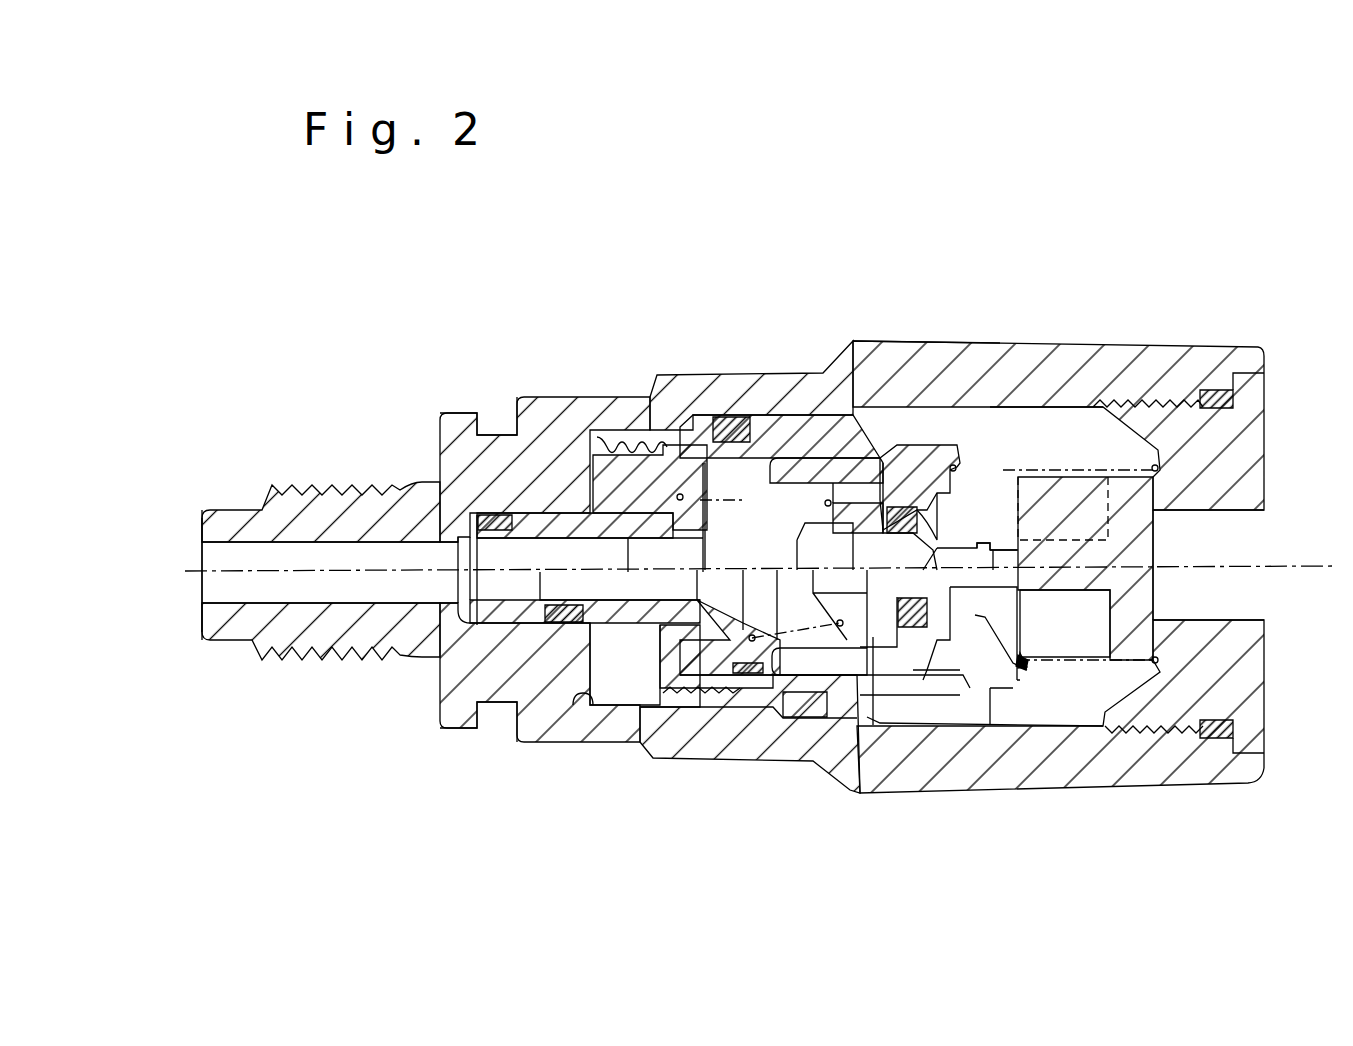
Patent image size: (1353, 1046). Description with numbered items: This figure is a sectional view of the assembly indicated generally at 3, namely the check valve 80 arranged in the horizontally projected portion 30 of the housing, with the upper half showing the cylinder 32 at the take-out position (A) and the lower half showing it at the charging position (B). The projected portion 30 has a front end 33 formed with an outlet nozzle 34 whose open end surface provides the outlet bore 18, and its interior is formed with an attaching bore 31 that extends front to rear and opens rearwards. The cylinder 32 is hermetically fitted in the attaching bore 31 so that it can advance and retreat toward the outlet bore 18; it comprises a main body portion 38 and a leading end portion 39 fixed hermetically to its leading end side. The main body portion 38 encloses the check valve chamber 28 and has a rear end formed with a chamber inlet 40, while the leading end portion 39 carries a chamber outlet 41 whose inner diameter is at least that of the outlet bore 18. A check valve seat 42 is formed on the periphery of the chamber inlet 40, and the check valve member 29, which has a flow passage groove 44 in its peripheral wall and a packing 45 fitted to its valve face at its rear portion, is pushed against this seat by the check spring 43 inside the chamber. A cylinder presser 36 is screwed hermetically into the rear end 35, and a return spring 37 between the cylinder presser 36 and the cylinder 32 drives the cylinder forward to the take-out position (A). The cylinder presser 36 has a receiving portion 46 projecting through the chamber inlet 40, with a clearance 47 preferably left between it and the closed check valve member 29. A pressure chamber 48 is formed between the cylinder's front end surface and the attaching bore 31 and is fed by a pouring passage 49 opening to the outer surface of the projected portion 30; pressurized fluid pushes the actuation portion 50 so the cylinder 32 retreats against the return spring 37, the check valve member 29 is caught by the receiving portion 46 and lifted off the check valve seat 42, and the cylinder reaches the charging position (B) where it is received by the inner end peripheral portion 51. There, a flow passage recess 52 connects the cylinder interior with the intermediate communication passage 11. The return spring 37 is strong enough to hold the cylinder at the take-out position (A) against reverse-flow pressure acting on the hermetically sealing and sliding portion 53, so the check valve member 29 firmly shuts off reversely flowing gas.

The coupling 3 is at (1093, 250).
The intermediate communication passage 11 is at (883, 360).
The outlet bore 18 is at (202, 593).
The check valve chamber 28 is at (765, 552).
The check valve member 29 is at (873, 637).
The horizontally projected portion 30 is at (1106, 360).
The attaching bore 31 is at (724, 727).
The cylinder 32 is at (720, 292).
The front end 33 is at (210, 508).
The outlet nozzle 34 is at (333, 523).
The rear end 35 is at (1262, 368).
The cylinder presser 36 is at (1248, 672).
The return spring 37 is at (1118, 672).
The main body portion 38 is at (707, 430).
The leading end portion 39 is at (617, 453).
The chamber inlet 40 is at (990, 687).
The chamber outlet 41 is at (545, 594).
The check valve seat 42 is at (915, 670).
The check spring 43 is at (743, 500).
The flow passage groove 44 is at (845, 722).
The seat ring 45 is at (907, 507).
The receiving portion 46 is at (983, 545).
The clearance 47 is at (981, 548).
The pressure chamber 48 is at (612, 695).
The pouring passage 49 is at (582, 735).
The actuation portion 50 is at (657, 673).
The inner end peripheral portion 51 is at (1012, 647).
The flow passage recess 52 is at (1090, 624).
The hermetically sealing and sliding portion 53 is at (492, 516).
The check valve 80 is at (558, 438).
The take-out position A is at (815, 433).
The charging position B is at (947, 692).